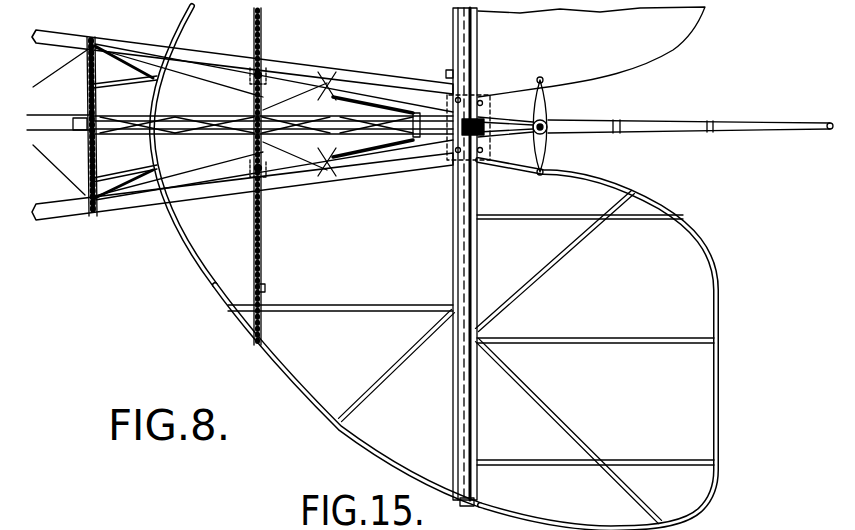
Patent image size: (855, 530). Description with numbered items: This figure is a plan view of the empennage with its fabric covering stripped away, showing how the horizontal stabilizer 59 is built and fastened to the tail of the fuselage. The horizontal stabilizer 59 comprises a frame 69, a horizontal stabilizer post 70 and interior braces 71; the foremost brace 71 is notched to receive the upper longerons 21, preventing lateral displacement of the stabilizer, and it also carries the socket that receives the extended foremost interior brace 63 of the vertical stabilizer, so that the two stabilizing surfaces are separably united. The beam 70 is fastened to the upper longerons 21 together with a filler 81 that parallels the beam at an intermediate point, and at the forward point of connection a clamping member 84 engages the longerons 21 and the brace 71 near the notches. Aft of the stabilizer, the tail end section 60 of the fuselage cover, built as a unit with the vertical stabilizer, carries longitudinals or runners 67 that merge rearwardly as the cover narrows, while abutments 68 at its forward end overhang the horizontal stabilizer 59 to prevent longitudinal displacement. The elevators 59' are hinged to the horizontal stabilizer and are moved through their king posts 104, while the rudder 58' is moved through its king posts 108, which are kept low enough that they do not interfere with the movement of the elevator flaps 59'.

The upper longerons 21 is at (62, 27).
The rudder 58' is at (690, 146).
The horizontal stabilizer 59 is at (347, 395).
The elevators 59' is at (625, 344).
The tail end section of the fuselage cover 60 is at (87, 97).
The interior braces 63 is at (412, 113).
The longitudinals or runners 67 is at (110, 80).
The abutments 68 is at (142, 212).
The frame 69 is at (200, 22).
The horizontal stabilizer post 70 is at (453, 262).
The interior braces 71 is at (283, 303).
The filler 81 is at (452, 76).
The clamping member 84 is at (263, 77).
The king posts of the elevator flaps 104 is at (487, 135).
The king posts of the rudder 108 is at (546, 97).